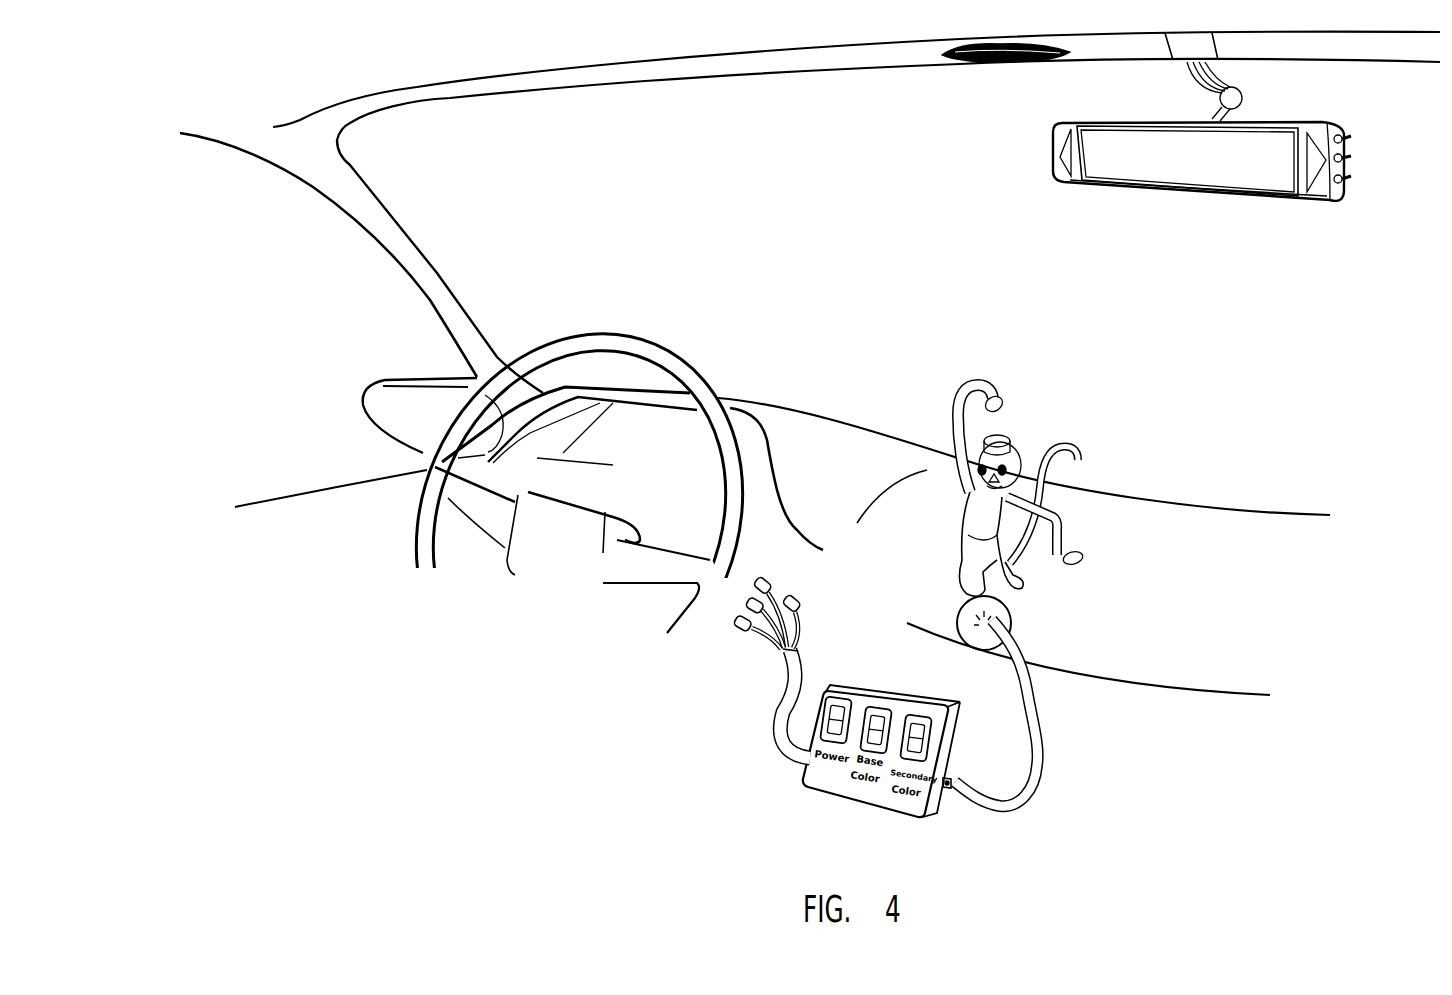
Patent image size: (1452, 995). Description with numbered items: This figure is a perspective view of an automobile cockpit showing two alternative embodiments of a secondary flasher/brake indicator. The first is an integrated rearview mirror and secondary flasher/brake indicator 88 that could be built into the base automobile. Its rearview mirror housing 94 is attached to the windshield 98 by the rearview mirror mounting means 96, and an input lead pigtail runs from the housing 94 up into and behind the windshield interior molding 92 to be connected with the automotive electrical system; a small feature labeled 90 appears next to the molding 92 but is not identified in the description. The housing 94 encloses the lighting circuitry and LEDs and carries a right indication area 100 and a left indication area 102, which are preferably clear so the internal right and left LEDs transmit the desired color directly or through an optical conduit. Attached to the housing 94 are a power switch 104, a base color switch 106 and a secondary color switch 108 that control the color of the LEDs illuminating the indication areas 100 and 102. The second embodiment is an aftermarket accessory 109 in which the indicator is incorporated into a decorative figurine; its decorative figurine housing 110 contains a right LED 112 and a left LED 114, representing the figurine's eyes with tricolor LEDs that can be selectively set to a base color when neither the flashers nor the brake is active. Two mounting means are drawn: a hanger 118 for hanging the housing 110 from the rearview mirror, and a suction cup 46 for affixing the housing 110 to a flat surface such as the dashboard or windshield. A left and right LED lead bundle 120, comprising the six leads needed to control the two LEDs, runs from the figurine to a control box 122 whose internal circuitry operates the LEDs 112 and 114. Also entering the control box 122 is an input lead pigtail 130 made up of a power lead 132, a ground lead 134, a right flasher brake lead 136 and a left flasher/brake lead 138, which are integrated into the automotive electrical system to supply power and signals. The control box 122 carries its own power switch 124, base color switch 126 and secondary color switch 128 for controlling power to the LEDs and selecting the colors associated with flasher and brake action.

The suction cup 46 is at (1010, 617).
The integrated rearview mirror and secondary flasher/brake indicator 88 is at (1153, 203).
The dome light 90 is at (1015, 63).
The windshield interior molding 92 is at (918, 50).
The rearview mirror housing 94 is at (1282, 124).
The rearview mirror mounting means 96 is at (1242, 100).
The windshield 98 is at (1270, 88).
The right indication area 100 is at (1308, 168).
The left indication area 102 is at (1058, 157).
The power switch 104 is at (1351, 137).
The base color switch 106 is at (1351, 156).
The secondary color switch 108 is at (1351, 177).
The aftermarket accessory 109 is at (1072, 396).
The decorative figurine housing 110 is at (990, 517).
The right LED 112 is at (1012, 453).
The left LED 114 is at (977, 469).
The hanger 118 is at (987, 377).
The left and right LED lead bundle 120 is at (1042, 718).
The control box 122 is at (937, 800).
The power switch 124 is at (837, 693).
The base color switch 126 is at (873, 707).
The secondary color switch 128 is at (913, 717).
The input lead pigtail 130 is at (778, 712).
The power lead 132 is at (740, 626).
The ground lead 134 is at (747, 604).
The right flasher brake lead 136 is at (763, 582).
The left flasher/brake lead 138 is at (793, 598).